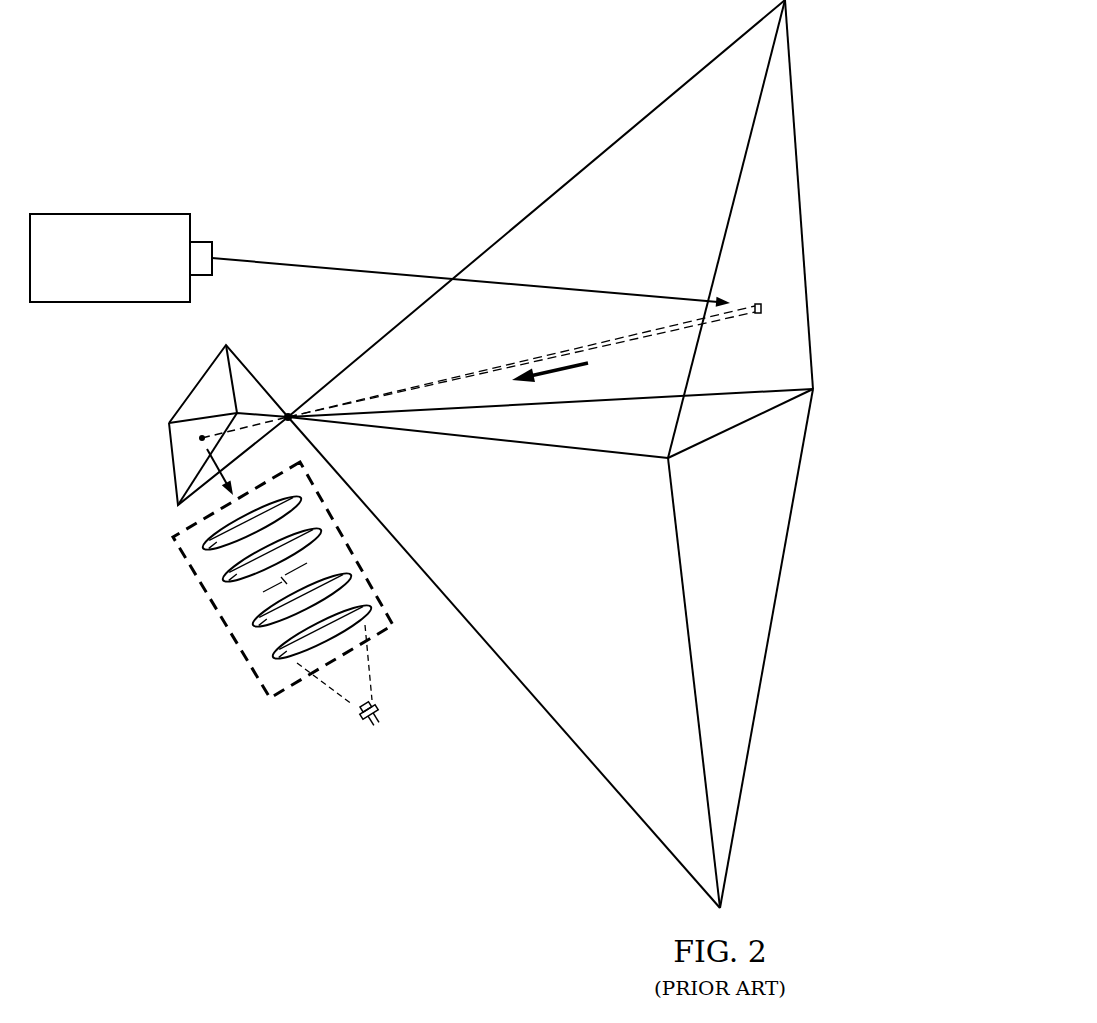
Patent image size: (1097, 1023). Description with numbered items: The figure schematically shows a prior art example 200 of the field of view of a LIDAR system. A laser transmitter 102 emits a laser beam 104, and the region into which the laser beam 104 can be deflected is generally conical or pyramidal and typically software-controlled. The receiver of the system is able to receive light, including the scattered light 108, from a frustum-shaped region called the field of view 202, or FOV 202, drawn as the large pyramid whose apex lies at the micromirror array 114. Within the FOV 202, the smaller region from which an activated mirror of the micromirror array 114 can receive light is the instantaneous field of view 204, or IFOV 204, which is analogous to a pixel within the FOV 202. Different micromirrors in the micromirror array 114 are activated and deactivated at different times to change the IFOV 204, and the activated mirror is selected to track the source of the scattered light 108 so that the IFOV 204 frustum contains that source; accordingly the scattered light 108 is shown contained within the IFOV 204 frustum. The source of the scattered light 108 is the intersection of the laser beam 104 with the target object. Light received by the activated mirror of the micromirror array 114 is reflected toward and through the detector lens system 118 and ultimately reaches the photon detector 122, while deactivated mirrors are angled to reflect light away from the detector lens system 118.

The prior art example 200 is at (312, 69).
The laser transmitter 102 is at (110, 213).
The laser beam 104 is at (345, 268).
The scattered light 108 is at (623, 342).
The micromirror array 114 is at (172, 470).
The detector lens system 118 is at (210, 628).
The photon detector 122 is at (342, 718).
The field of view 202 is at (790, 150).
The instantaneous field of view 204 is at (765, 308).